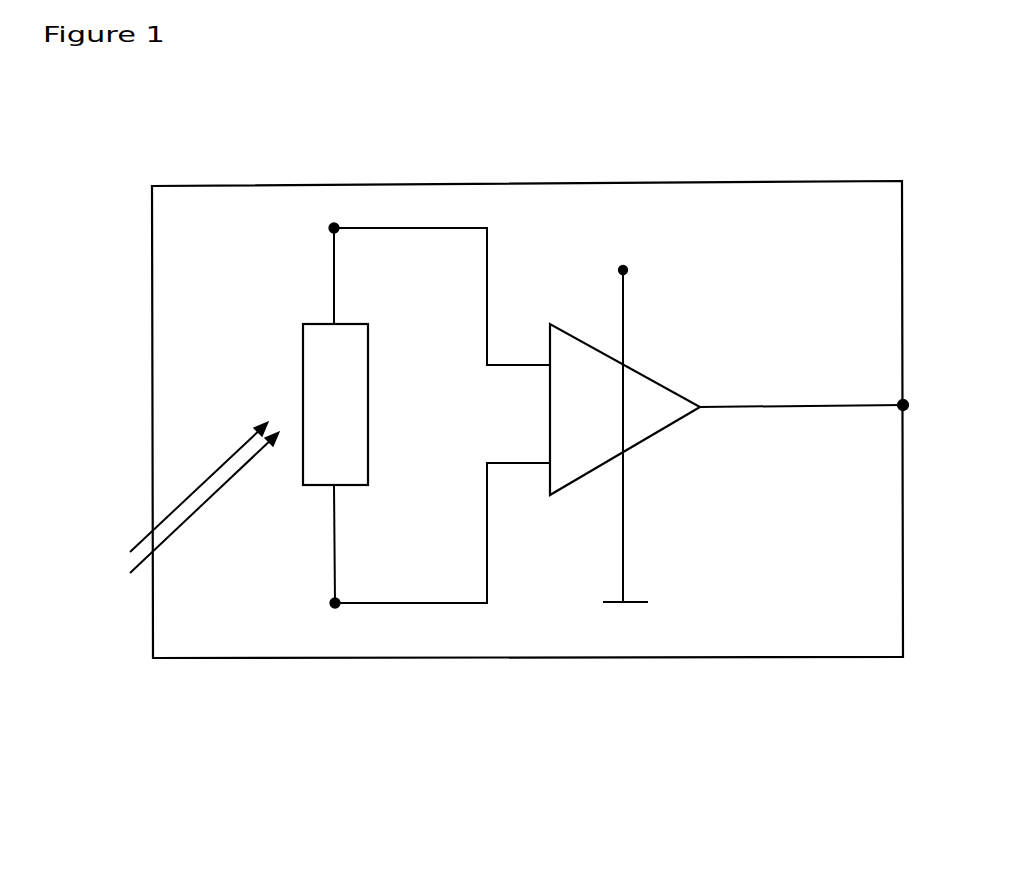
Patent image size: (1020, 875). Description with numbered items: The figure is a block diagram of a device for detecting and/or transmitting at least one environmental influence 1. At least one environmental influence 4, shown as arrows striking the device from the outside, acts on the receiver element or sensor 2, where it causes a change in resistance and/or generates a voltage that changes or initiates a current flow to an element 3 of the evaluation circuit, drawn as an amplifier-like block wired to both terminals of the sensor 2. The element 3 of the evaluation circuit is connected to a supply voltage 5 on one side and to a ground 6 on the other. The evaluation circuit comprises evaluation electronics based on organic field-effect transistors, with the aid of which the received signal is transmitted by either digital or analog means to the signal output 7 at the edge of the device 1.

The device for detecting and/or transmitting at least one environmental influence 1 is at (456, 670).
The receiver element or sensor 2 is at (335, 415).
The element of the evaluation circuit 3 is at (558, 377).
The environmental influence 4 is at (183, 510).
The supply voltage 5 is at (644, 424).
The ground 6 is at (633, 576).
The signal output 7 is at (826, 407).